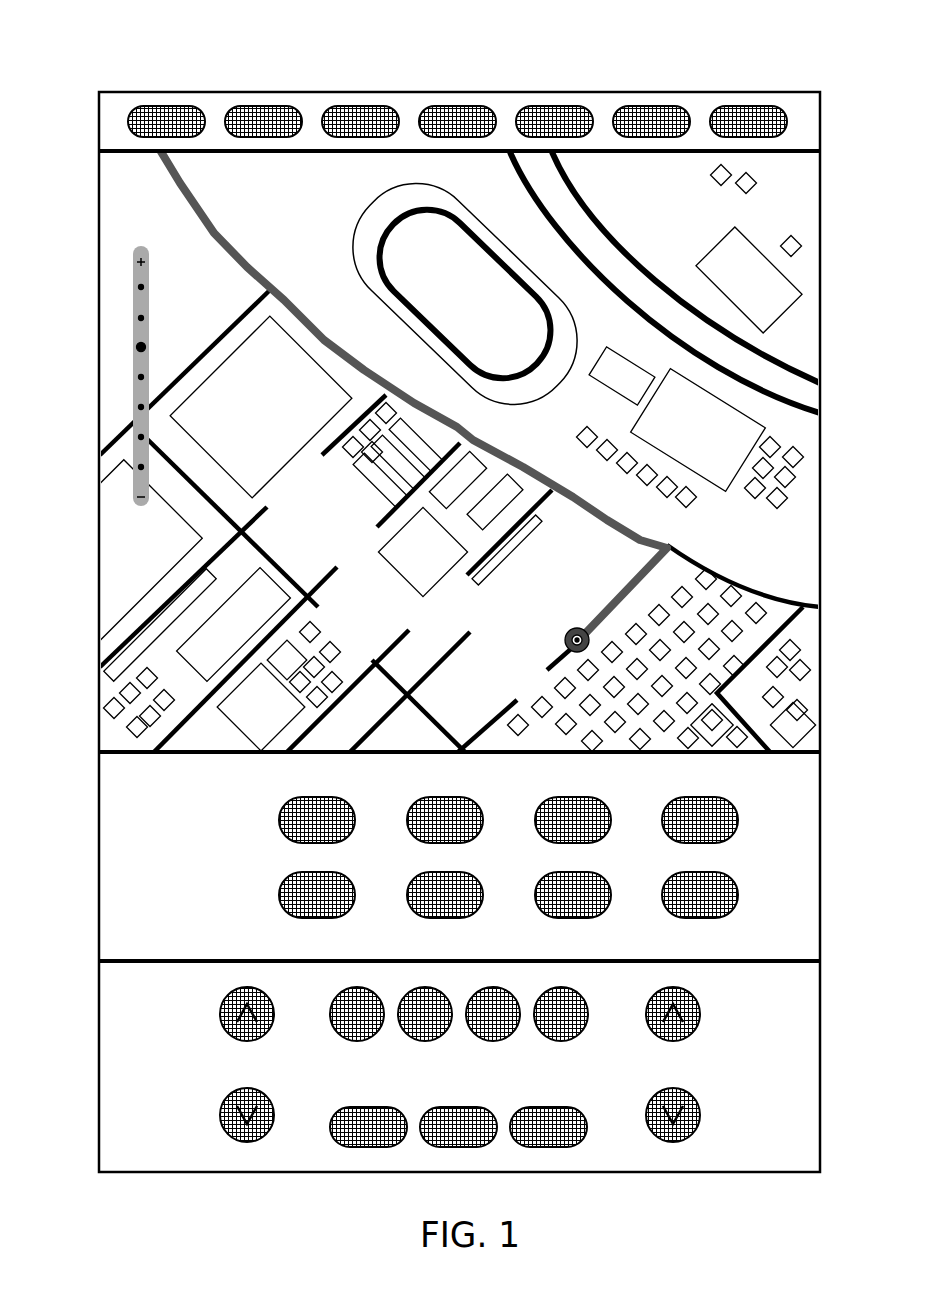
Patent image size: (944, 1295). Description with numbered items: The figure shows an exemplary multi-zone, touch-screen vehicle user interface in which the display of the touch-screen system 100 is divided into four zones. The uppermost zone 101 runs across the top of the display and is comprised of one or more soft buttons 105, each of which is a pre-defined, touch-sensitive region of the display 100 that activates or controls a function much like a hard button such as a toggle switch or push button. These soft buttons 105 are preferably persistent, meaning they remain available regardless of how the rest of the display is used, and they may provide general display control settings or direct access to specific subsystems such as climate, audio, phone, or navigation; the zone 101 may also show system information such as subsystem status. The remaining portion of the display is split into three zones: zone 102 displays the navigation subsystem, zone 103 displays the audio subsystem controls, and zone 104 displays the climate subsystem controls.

The touch-screen system 100 is at (448, 588).
The uppermost zone 101 is at (96, 122).
The zone 102 is at (96, 408).
The zone 103 is at (96, 858).
The zone 104 is at (96, 1066).
The soft buttons 105 is at (457, 121).